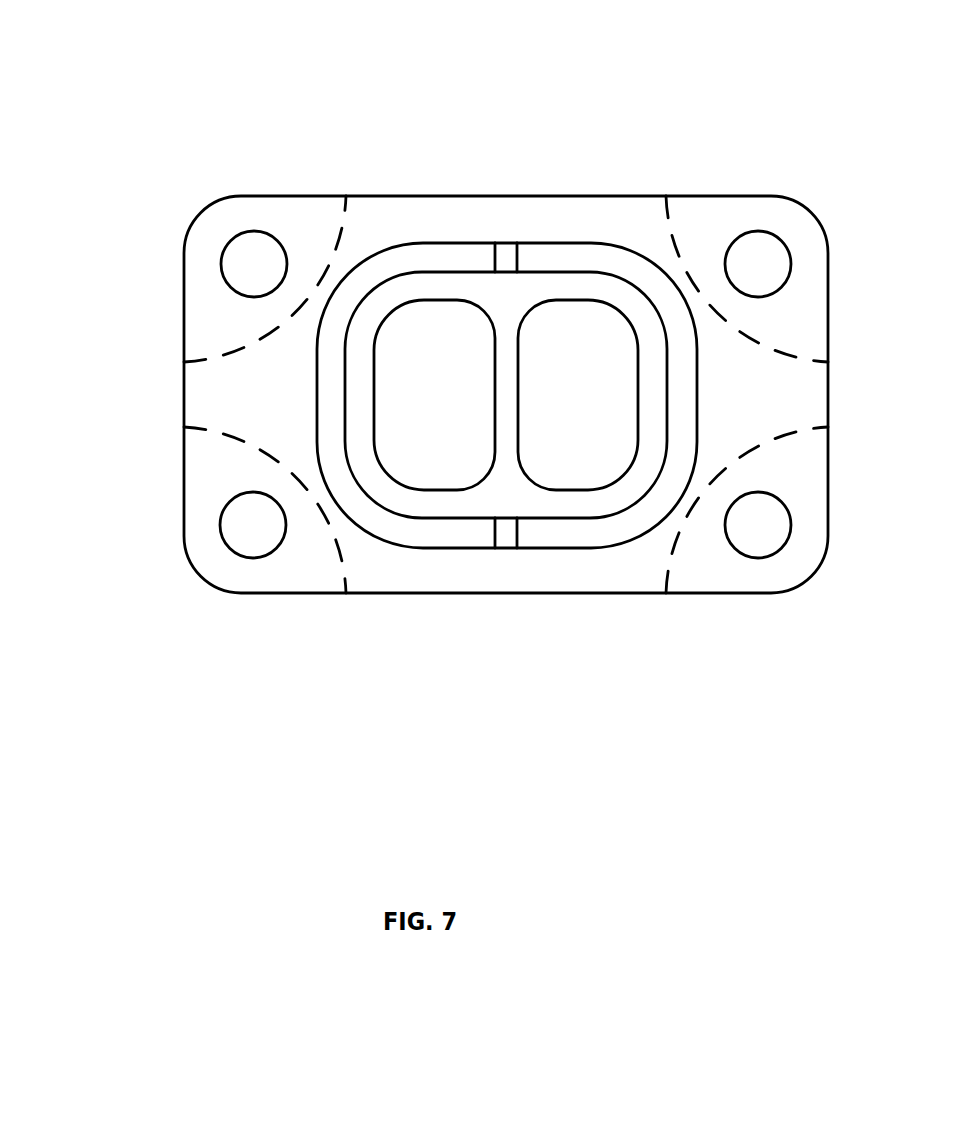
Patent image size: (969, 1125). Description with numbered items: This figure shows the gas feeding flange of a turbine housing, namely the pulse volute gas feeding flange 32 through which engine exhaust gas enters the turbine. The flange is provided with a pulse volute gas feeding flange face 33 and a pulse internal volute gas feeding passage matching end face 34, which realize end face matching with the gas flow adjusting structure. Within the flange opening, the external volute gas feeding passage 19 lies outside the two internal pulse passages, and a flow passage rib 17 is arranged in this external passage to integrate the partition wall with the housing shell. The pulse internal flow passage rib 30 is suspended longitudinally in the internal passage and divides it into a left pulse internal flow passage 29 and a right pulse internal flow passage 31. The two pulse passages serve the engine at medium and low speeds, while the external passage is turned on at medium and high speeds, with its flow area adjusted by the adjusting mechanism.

The flow passage rib 17 is at (507, 533).
The external volute gas feeding passage 19 is at (610, 265).
The left pulse internal flow passage 29 is at (447, 375).
The pulse internal flow passage rib 30 is at (512, 380).
The right pulse internal flow passage 31 is at (593, 365).
The pulse volute gas feeding flange 32 is at (138, 217).
The pulse volute gas feeding flange face 33 is at (702, 227).
The pulse internal volute gas feeding passage matching end face 34 is at (633, 483).